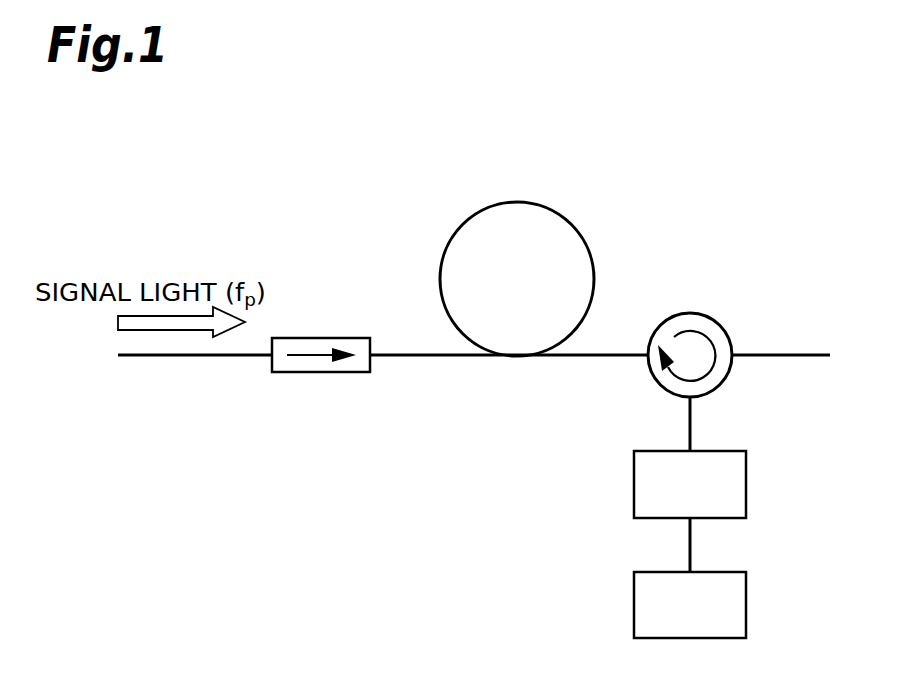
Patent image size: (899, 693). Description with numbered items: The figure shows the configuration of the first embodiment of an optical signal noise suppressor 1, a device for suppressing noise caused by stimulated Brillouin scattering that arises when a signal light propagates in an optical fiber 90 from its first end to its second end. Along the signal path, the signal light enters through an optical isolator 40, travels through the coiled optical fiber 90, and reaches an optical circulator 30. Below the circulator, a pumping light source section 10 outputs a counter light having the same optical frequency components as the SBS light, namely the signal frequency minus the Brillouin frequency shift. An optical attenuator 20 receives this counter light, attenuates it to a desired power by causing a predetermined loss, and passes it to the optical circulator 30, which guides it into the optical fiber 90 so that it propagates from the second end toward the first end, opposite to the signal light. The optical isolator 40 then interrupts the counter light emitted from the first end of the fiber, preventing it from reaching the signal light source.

The optical signal noise suppressor 1 is at (721, 95).
The pumping light source section 10 is at (746, 608).
The optical attenuator 20 is at (746, 481).
The optical circulator 30 is at (691, 313).
The optical isolator 40 is at (322, 338).
The optical fiber 90 is at (571, 217).